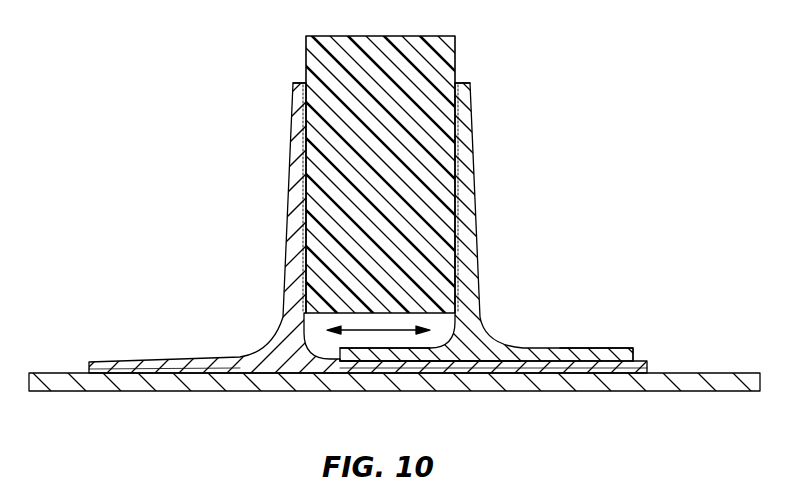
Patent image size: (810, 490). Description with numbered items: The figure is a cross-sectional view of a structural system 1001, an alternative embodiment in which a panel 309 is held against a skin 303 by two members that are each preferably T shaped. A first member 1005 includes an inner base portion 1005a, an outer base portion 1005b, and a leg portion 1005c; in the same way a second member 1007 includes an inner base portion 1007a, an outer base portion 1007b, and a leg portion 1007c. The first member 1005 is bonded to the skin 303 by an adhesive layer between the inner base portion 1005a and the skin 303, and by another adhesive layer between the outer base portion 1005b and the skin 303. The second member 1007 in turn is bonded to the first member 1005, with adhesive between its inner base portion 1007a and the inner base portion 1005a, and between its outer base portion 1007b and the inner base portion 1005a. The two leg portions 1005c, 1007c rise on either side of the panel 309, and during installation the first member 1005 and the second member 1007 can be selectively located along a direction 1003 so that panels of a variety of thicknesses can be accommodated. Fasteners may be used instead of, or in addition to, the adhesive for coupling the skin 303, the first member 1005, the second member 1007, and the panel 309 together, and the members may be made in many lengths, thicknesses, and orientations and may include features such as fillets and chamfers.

The system 1001 is at (188, 150).
The skin 303 is at (207, 392).
The panel 309 is at (456, 62).
The direction 1003 is at (387, 329).
The first member 1005 is at (280, 333).
The inner base portion 1005a is at (647, 367).
The outer base portion 1005b is at (152, 358).
The leg portion 1005c is at (292, 98).
The second member 1007 is at (480, 305).
The inner base portion 1007a is at (419, 362).
The outer base portion 1007b is at (611, 348).
The leg portion 1007c is at (472, 158).